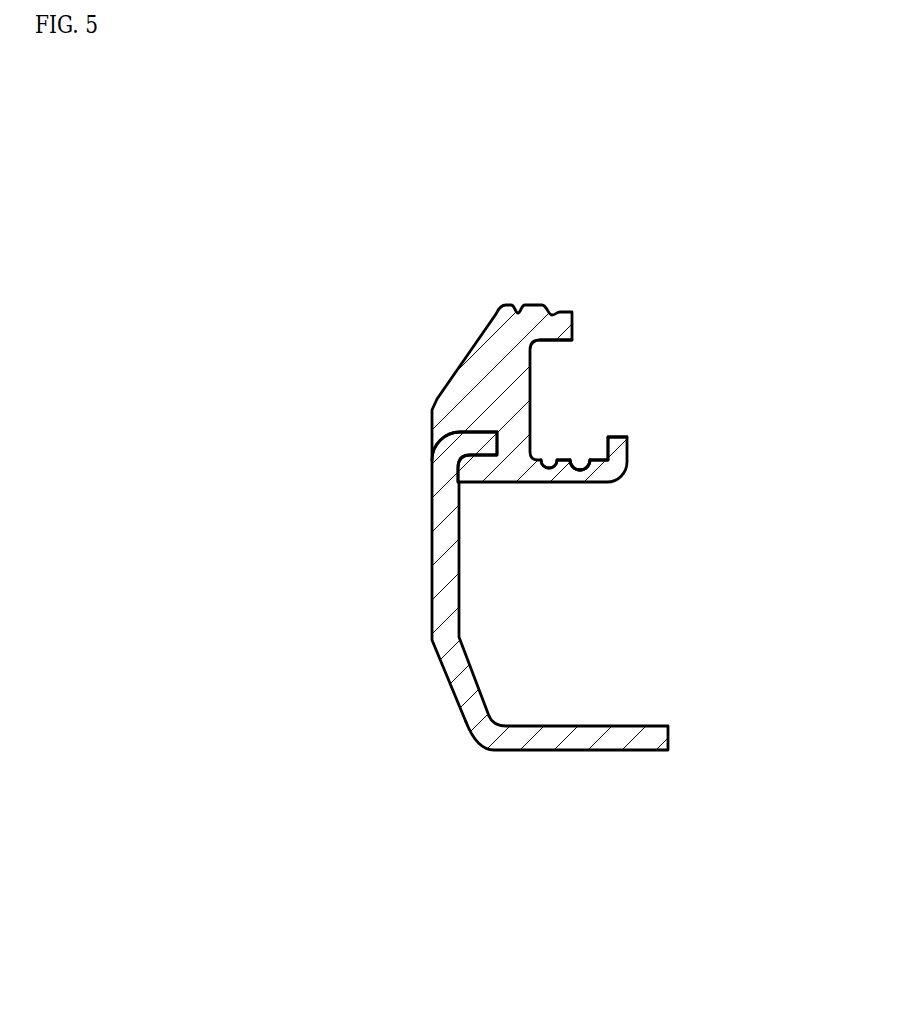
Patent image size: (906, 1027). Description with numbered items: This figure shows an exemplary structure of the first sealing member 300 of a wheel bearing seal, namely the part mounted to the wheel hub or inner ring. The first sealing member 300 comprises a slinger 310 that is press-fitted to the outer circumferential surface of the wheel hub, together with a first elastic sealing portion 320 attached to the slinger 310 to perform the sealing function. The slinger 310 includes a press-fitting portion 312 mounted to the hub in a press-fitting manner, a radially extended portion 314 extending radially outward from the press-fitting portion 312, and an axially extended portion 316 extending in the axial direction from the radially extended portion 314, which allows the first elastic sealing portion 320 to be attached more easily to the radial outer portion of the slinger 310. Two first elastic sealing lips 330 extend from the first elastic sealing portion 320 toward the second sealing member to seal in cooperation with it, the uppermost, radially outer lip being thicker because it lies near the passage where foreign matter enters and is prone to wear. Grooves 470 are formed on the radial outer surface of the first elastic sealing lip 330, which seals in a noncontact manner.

The first sealing member 300 is at (323, 105).
The slinger 310 is at (470, 575).
The press-fitting portion 312 is at (567, 740).
The radially extended portion 314 is at (447, 595).
The axially extended portion 316 is at (484, 437).
The first elastic sealing portion 320 is at (567, 285).
The first elastic sealing lip 330 is at (567, 460).
The groove 470 is at (582, 464).